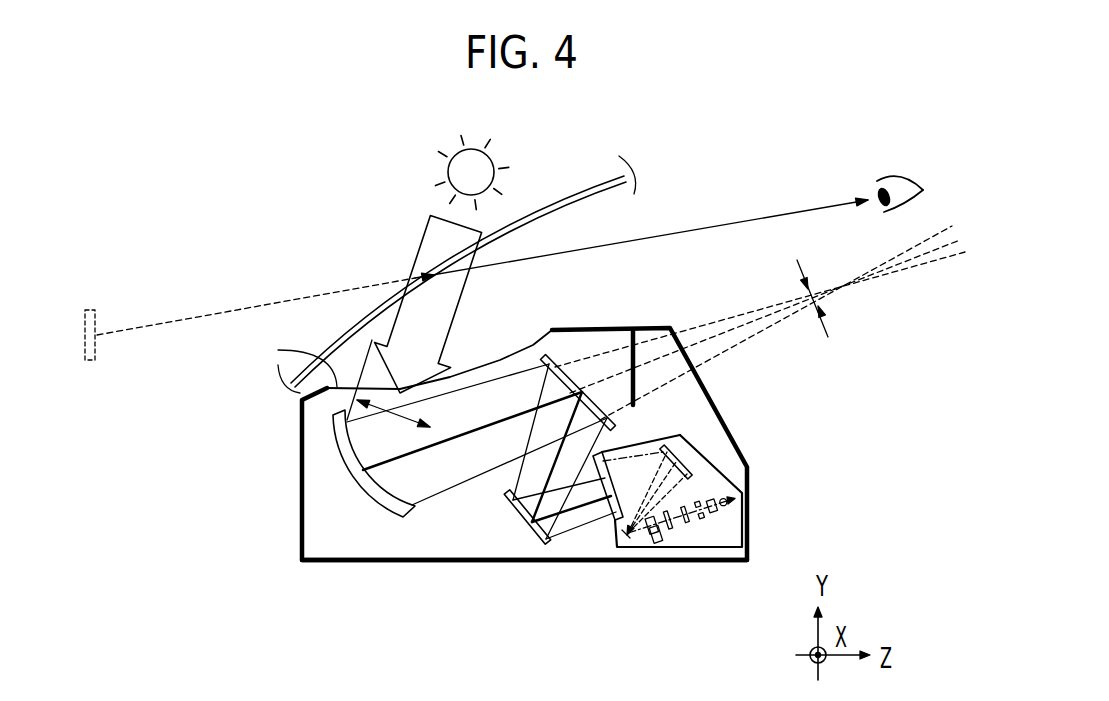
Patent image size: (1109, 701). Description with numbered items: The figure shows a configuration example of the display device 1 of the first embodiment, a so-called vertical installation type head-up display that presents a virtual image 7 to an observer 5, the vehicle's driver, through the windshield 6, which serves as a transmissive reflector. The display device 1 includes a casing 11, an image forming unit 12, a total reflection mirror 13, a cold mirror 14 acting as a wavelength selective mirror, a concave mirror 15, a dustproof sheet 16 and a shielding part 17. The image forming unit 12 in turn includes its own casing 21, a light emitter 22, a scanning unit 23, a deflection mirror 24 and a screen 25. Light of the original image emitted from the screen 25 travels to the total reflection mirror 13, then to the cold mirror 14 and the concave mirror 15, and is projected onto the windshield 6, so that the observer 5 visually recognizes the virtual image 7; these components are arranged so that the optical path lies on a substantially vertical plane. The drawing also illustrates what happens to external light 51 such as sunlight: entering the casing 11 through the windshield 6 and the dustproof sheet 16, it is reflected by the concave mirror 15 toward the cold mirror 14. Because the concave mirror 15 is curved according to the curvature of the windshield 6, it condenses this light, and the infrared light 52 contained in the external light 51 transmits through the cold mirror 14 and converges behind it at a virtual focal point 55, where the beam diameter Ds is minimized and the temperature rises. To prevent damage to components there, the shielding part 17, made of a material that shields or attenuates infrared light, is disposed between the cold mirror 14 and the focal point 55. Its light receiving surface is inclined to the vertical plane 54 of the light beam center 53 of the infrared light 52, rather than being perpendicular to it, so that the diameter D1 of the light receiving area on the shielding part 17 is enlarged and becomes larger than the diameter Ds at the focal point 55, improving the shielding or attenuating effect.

The display device 1 is at (262, 524).
The observer 5 is at (878, 160).
The windshield 6 is at (575, 188).
The virtual image 7 is at (91, 309).
The casing 11 is at (430, 562).
The image forming unit 12 is at (701, 496).
The total reflection mirror 13 is at (530, 537).
The cold mirror 14 is at (547, 352).
The concave mirror 15 is at (365, 497).
The dustproof sheet 16 is at (278, 350).
The shielding part 17 is at (633, 330).
The casing 21 is at (717, 472).
The light emitter 22 is at (703, 538).
The scanning unit 23 is at (627, 533).
The deflection mirror 24 is at (673, 458).
The screen 25 is at (603, 518).
The external light 51 is at (423, 233).
The infrared light 52 is at (690, 327).
The light beam center 53 is at (877, 272).
The vertical plane 54 is at (730, 350).
The focal point 55 is at (848, 328).
The diameter of light receiving area D1 is at (623, 403).
The diameter of light beam Ds is at (821, 262).